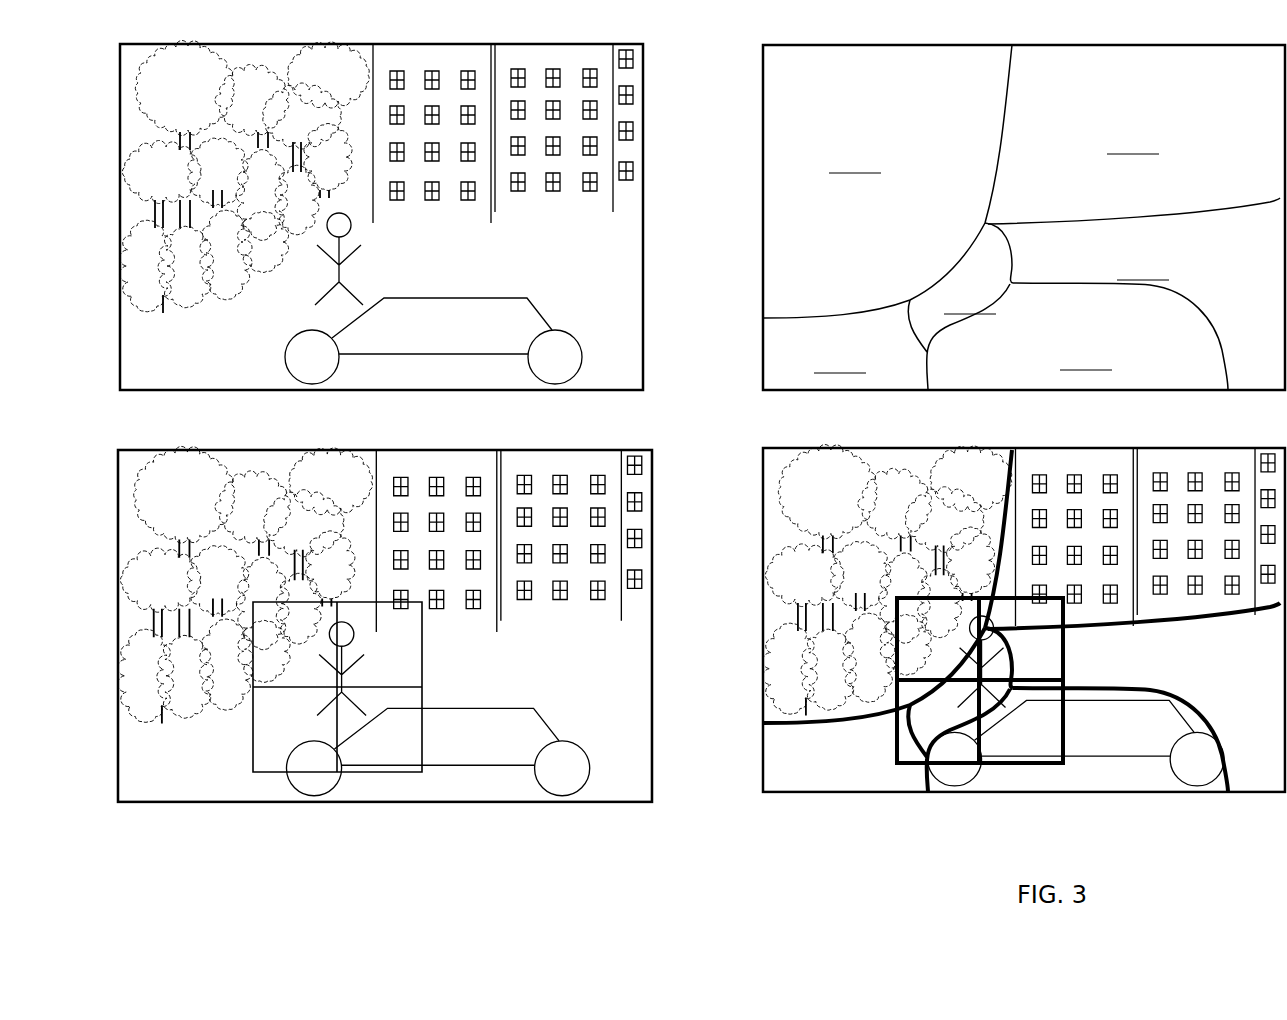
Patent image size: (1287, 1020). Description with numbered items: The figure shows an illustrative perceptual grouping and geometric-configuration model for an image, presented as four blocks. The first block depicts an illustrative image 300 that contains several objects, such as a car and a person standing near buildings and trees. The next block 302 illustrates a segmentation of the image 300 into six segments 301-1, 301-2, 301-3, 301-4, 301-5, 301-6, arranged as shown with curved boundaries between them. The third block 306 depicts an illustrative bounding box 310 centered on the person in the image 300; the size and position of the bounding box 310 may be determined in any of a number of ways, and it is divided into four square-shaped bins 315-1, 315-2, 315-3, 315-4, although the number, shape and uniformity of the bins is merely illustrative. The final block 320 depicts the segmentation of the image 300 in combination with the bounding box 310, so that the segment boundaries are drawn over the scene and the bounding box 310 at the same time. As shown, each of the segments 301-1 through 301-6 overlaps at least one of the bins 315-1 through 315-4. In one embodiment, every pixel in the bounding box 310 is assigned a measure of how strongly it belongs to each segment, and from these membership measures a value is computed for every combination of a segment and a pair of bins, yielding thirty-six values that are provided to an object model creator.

The image 300 is at (644, 98).
The segmentation block 302 is at (762, 177).
The bounding box block 306 is at (652, 498).
The combined segmentation and bounding box block 320 is at (762, 600).
The bounding box 310 is at (283, 772).
The bin 315-1 is at (272, 638).
The bin 315-2 is at (407, 650).
The bin 315-3 is at (265, 740).
The bin 315-4 is at (415, 702).
The segment 301-1 is at (905, 462).
The segment 301-2 is at (1153, 462).
The segment 301-3 is at (968, 792).
The segment 301-4 is at (1127, 780).
The segment 301-5 is at (820, 780).
The segment 301-6 is at (1262, 780).